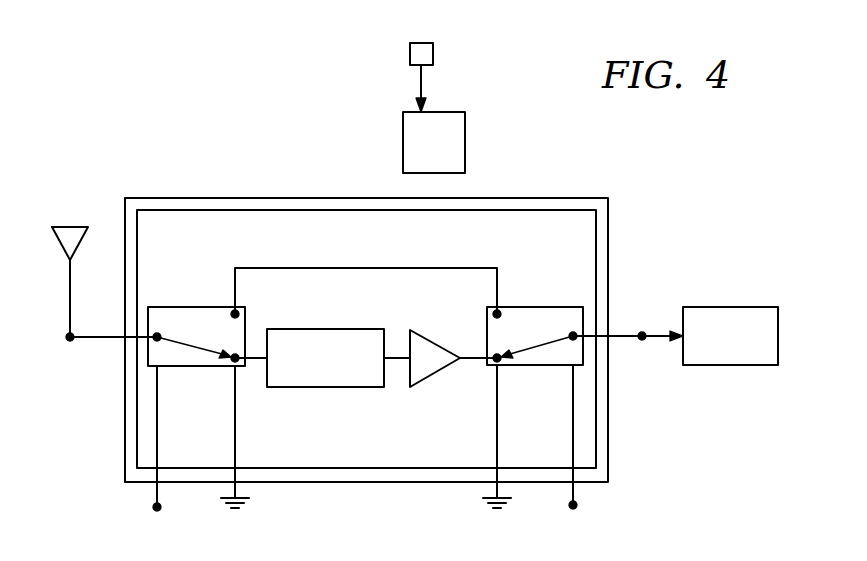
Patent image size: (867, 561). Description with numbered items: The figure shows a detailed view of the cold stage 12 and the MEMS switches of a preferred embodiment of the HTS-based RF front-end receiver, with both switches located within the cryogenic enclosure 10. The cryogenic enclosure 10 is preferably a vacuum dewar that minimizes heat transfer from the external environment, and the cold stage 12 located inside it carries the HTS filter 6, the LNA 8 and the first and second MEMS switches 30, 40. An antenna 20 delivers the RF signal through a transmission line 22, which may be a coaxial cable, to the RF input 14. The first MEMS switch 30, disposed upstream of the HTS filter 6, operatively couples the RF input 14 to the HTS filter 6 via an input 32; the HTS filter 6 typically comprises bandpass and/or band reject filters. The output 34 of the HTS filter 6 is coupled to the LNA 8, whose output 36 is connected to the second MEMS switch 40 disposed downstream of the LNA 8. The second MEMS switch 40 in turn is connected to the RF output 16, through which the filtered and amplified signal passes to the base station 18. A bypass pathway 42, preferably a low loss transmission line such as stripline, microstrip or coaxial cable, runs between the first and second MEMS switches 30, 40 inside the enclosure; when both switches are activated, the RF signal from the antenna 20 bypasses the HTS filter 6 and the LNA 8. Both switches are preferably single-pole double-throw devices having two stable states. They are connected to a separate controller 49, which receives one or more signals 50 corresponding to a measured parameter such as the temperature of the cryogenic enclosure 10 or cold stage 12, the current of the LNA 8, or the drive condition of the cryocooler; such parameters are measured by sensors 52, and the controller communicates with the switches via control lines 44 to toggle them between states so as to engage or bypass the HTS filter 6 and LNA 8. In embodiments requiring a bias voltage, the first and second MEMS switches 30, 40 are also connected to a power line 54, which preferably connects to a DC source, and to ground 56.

The HTS filter 6 is at (327, 329).
The low noise amplifier (LNA) 8 is at (440, 343).
The cryogenic enclosure 10 is at (365, 482).
The cold stage 12 is at (311, 468).
The RF input 14 is at (70, 337).
The RF output 16 is at (642, 336).
The base station 18 is at (733, 365).
The antenna 20 is at (82, 243).
The transmission line 22 is at (70, 305).
The first MEMS switch 30 is at (170, 307).
The input 32 is at (256, 360).
The output of the HTS filter 34 is at (400, 360).
The output of the LNA 36 is at (473, 360).
The second MEMS switch 40 is at (560, 307).
The bypass pathway 42 is at (445, 268).
The control lines 44 is at (278, 143).
The controller 49 is at (403, 128).
The signals 50 is at (423, 80).
The sensors 52 is at (428, 43).
The power line 54 is at (157, 494).
The ground 56 is at (235, 493).